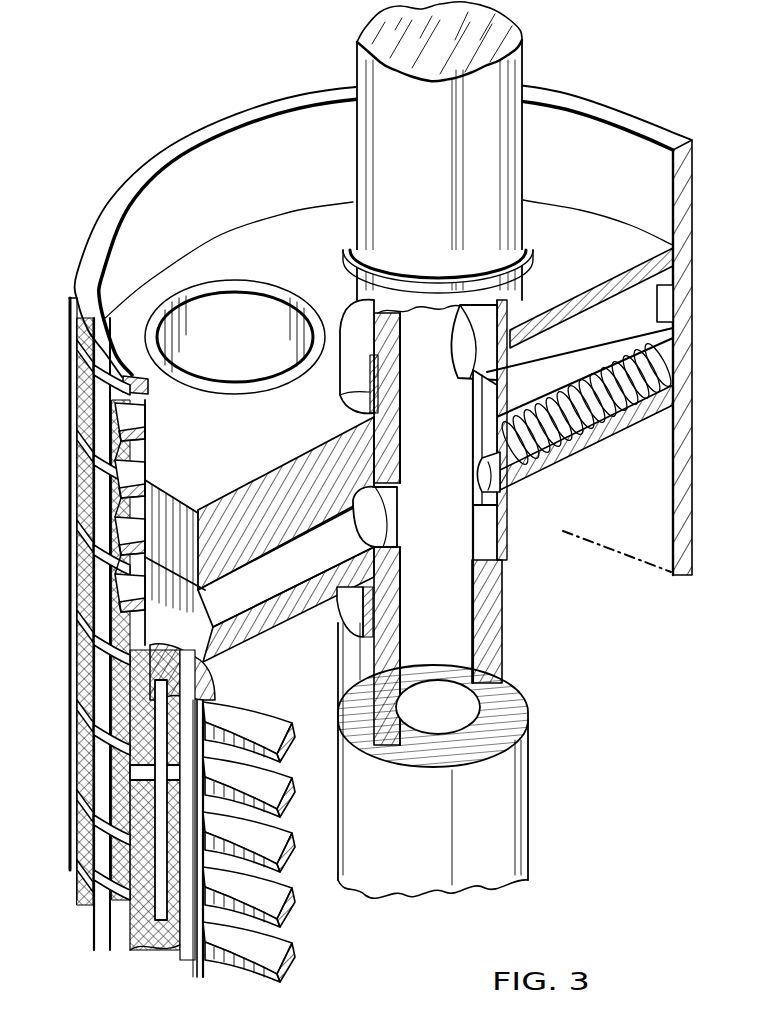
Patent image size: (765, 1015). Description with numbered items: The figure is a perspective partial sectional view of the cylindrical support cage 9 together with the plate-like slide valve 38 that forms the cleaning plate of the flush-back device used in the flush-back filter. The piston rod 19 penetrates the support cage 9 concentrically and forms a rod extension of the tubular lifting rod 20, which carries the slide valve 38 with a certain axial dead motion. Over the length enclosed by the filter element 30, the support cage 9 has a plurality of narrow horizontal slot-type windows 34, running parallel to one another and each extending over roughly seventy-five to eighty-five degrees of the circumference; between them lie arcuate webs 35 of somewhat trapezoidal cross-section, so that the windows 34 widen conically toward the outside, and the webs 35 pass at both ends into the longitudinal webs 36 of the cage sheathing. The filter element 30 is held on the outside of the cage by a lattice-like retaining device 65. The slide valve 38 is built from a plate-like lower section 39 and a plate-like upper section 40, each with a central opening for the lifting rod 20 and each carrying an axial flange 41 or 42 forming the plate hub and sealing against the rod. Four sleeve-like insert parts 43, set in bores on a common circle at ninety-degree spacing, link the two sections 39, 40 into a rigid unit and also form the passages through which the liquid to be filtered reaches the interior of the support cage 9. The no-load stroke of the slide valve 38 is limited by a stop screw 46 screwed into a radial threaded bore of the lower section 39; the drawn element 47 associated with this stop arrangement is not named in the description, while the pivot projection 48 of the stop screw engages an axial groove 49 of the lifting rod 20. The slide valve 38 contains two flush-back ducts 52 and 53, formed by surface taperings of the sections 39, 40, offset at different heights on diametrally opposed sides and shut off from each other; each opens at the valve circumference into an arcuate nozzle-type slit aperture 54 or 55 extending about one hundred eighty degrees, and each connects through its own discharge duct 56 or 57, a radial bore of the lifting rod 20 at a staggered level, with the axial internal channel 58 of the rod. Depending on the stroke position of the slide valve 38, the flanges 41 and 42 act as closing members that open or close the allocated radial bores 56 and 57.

The support cage 9 is at (650, 132).
The piston rod 19 is at (503, 36).
The tubular lifting rod 20 is at (510, 810).
The filter element 30 is at (130, 935).
The slot-type windows 34 is at (127, 459).
The arcuate webs 35 is at (147, 432).
The longitudinal webs 36 is at (196, 958).
The slide valve 38 is at (628, 250).
The slide valve lower section 39 is at (265, 627).
The slide valve upper section 40 is at (228, 512).
The axial flange 41 is at (340, 610).
The axial flange 42 is at (347, 377).
The sleeve-like insert parts 43 is at (262, 305).
The stop screw 46 is at (587, 440).
The spring 47 is at (688, 373).
The pivot projection 48 is at (503, 477).
The axial groove 49 is at (490, 408).
The flush-back duct 52 is at (573, 340).
The flush-back duct 53 is at (230, 615).
The slit aperture 54 is at (688, 315).
The slit aperture 55 is at (213, 597).
The discharge duct 56 is at (462, 368).
The discharge duct 57 is at (365, 507).
The axial internal channel 58 is at (470, 713).
The retaining device 65 is at (72, 852).